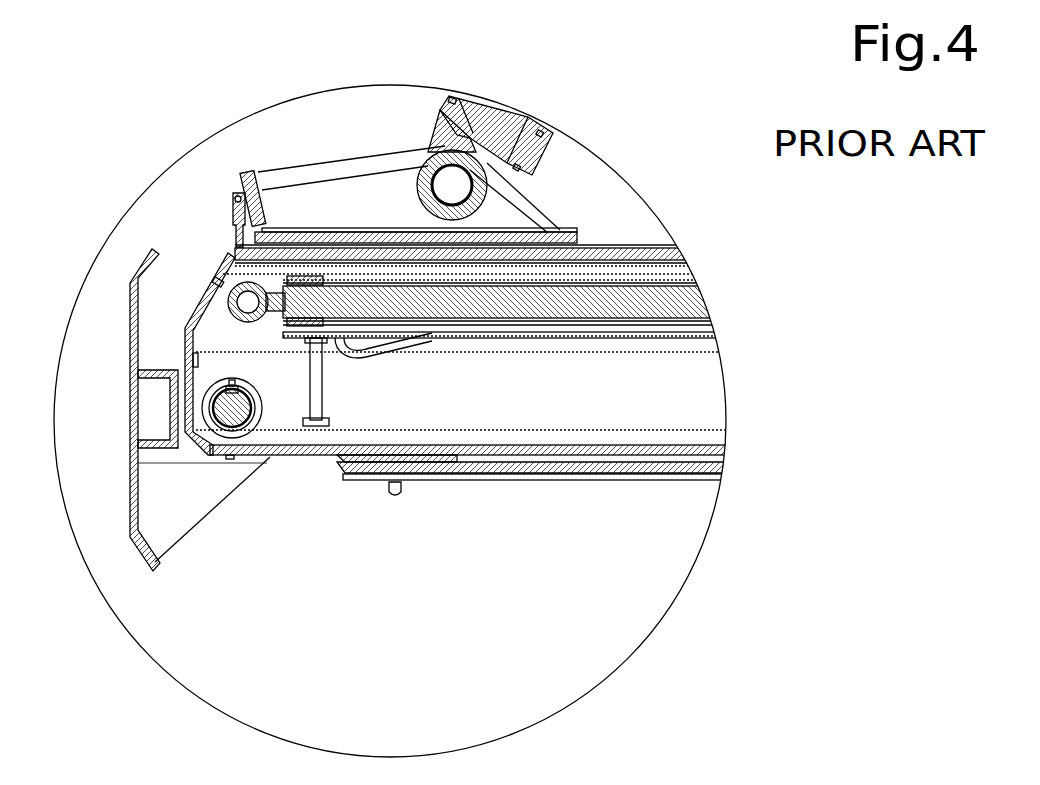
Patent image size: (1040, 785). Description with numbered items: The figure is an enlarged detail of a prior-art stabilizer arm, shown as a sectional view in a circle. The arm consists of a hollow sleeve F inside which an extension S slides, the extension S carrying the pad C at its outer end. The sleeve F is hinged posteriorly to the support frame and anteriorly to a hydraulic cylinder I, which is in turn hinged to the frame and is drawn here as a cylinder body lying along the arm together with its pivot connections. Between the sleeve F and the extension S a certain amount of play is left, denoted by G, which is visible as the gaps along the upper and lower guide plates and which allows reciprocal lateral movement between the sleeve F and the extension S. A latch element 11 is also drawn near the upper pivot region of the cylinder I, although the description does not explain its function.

The latch member 11 is at (228, 217).
The hydraulic cylinder I is at (410, 116).
The extension S is at (206, 328).
The play G is at (623, 250).
The hollow sleeve F is at (514, 493).
The pad C is at (192, 533).